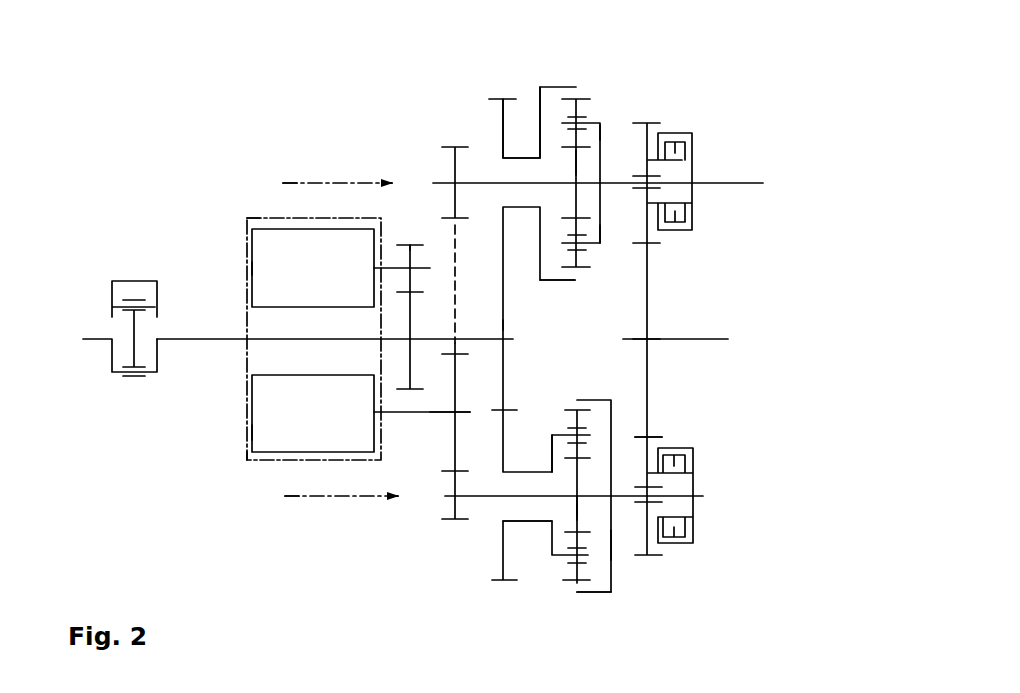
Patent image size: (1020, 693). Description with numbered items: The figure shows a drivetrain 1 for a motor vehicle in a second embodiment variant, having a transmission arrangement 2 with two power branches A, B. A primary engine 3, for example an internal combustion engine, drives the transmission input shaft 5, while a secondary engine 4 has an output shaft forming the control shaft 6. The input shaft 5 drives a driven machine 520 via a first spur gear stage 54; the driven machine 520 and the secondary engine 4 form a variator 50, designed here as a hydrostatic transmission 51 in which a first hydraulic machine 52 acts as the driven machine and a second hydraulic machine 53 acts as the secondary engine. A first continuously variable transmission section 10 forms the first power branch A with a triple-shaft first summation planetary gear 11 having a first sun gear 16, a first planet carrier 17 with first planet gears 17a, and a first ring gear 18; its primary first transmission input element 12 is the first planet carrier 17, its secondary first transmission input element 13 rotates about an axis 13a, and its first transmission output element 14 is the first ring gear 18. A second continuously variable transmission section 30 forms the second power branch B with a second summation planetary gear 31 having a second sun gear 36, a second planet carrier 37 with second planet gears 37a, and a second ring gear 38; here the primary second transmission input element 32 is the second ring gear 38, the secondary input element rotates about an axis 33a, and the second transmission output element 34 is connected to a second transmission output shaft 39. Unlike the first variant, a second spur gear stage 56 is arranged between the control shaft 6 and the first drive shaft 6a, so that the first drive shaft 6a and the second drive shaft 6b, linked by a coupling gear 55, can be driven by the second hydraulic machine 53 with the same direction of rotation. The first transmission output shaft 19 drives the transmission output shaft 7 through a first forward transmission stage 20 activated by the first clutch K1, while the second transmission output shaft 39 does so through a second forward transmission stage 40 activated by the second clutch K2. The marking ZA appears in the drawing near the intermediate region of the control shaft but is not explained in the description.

The drivetrain 1 is at (235, 158).
The transmission arrangement 2 is at (407, 137).
The primary engine 3 is at (107, 288).
The secondary engine 4 is at (250, 456).
The transmission input shaft 5 is at (218, 340).
The control shaft 6 is at (413, 413).
The first drive shaft 6a is at (493, 498).
The second drive shaft 6b is at (493, 163).
The transmission output shaft 7 is at (718, 339).
The first continuously variable transmission section 10 is at (528, 595).
The first summation planetary gear 11 is at (597, 603).
The primary first transmission input element 12 is at (505, 423).
The secondary first transmission input element 13 is at (570, 505).
The axis of rotation of the secondary first transmission input element 13a is at (283, 498).
The first transmission output element 14 is at (618, 543).
The first sun gear 16 is at (577, 512).
The first planet carrier 17 is at (552, 457).
The first planet gears 17a is at (573, 585).
The first ring gear 18 is at (592, 400).
The first transmission output shaft 19 is at (703, 496).
The first forward transmission stage 20 is at (665, 433).
The second continuously variable transmission section 30 is at (527, 93).
The second summation planetary gear 31 is at (608, 115).
The primary second transmission input element 32 is at (503, 235).
The axis of rotation of the secondary second transmission input element 33a is at (328, 183).
The second transmission output element 34 is at (602, 132).
The second sun gear 36 is at (572, 160).
The second planet carrier 37 is at (602, 228).
The second planet gears 37a is at (578, 97).
The second ring gear 38 is at (560, 280).
The second transmission output shaft 39 is at (735, 183).
The second forward transmission stage 40 is at (665, 243).
The variator 50 is at (240, 220).
The hydrostatic transmission 51 is at (248, 430).
The first hydraulic machine 52 is at (341, 268).
The second hydraulic machine 53 is at (361, 413).
The first spur gear stage 54 is at (407, 312).
The coupling gear 55 is at (453, 263).
The second spur gear stage 56 is at (450, 478).
The driven machine 520 is at (270, 268).
The first power branch A is at (378, 498).
The second power branch B is at (373, 183).
The first clutch K1 is at (688, 543).
The second clutch K2 is at (685, 133).
The intermediate shaft ZA is at (503, 325).